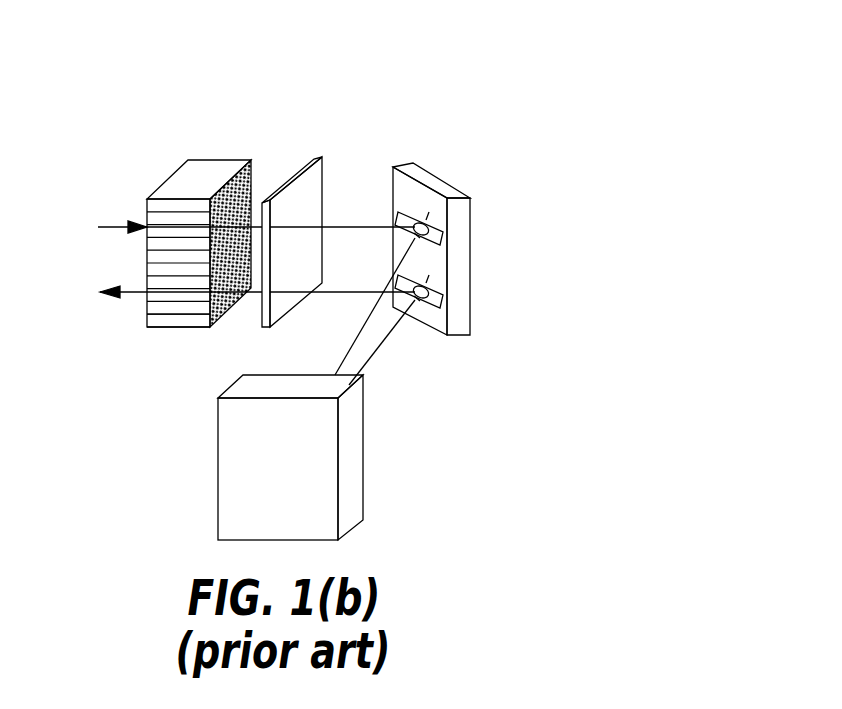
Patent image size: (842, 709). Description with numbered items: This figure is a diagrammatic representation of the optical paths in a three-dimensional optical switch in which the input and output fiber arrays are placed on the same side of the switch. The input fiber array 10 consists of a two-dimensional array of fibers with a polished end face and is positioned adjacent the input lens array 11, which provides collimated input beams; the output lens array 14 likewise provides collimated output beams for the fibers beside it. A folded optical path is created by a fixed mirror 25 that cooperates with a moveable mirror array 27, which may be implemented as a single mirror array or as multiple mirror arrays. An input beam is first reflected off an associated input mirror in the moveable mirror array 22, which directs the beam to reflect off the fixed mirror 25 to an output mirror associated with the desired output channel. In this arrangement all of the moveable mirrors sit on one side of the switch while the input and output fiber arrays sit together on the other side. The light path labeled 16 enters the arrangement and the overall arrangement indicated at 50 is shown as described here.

The input fiber array 10 is at (215, 168).
The input lens array 11 is at (313, 152).
The output lens array 14 is at (176, 320).
The input light beam 16 is at (122, 224).
The moveable mirror array 22 is at (123, 296).
The fixed mirror 25 is at (350, 473).
The moveable mirror array 27 is at (470, 272).
The prior art system 50 is at (435, 130).